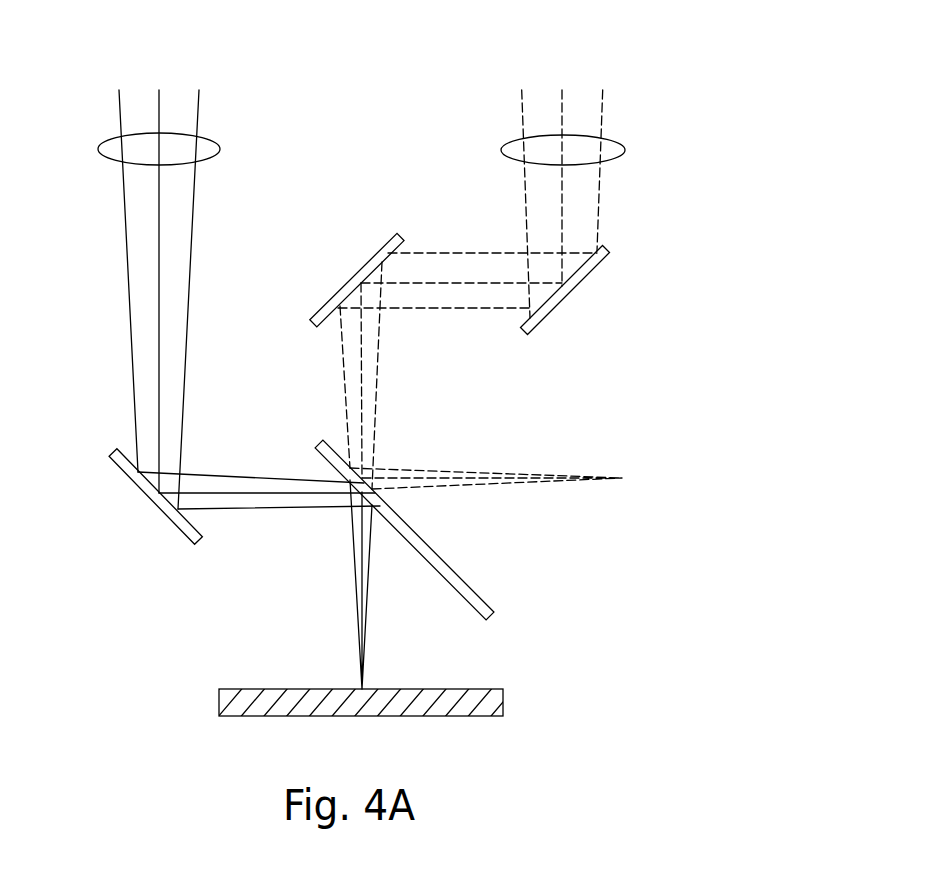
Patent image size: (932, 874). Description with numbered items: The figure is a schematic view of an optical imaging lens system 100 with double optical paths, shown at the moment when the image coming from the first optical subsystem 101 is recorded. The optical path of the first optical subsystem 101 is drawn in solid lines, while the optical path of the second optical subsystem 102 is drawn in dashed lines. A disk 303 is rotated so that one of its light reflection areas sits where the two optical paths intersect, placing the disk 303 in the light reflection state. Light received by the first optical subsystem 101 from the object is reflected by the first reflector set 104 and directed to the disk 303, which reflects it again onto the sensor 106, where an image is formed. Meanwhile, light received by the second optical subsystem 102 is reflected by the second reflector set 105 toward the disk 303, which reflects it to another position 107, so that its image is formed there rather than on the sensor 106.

The optical imaging lens system 100 is at (787, 128).
The first optical subsystem 101 is at (220, 148).
The second optical subsystem 102 is at (625, 148).
The first reflector set 104 is at (152, 502).
The second reflector set 105 is at (402, 239).
The sensor 106 is at (503, 700).
The another position 107 is at (622, 479).
The disk 303 is at (490, 614).